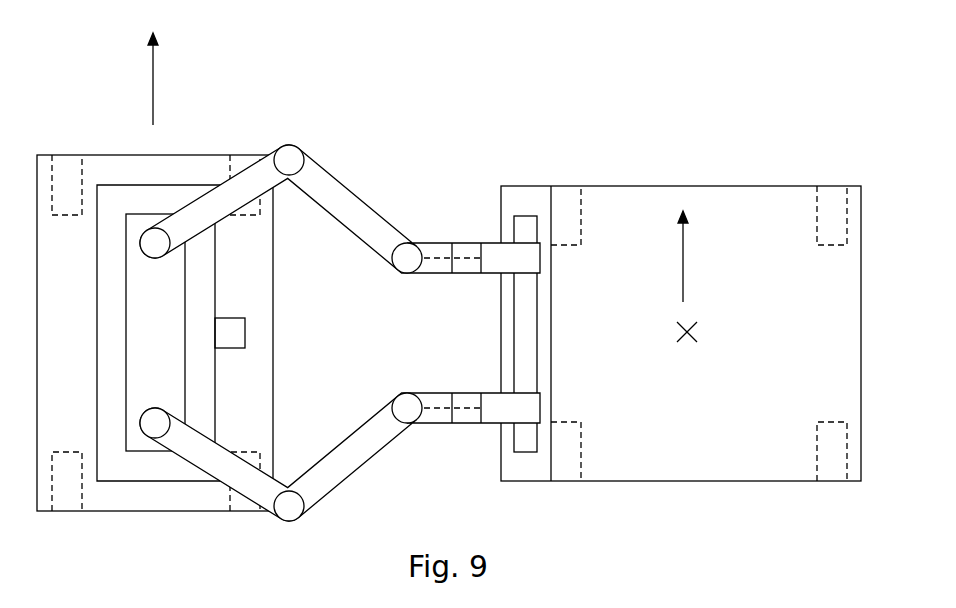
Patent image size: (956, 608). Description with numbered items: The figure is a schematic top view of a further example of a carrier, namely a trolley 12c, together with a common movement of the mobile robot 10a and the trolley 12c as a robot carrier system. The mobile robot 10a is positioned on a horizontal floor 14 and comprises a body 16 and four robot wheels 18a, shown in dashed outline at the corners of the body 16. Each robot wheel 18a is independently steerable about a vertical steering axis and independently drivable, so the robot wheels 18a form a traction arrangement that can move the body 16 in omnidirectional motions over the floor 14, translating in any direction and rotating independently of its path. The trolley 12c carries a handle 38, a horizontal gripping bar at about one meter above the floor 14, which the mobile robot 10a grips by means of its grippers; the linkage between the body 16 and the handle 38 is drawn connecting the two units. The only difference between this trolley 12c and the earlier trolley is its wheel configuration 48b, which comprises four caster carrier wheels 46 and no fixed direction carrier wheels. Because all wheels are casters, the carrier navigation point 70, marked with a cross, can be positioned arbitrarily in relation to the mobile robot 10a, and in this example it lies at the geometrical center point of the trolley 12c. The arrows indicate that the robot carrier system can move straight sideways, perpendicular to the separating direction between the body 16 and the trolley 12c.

The mobile robot 10a is at (104, 55).
The robot wheel 18a is at (70, 185).
The body 16 is at (78, 342).
The floor 14 is at (404, 493).
The handle 38 is at (510, 315).
The trolley 12c is at (678, 126).
The wheel configuration 48b is at (739, 158).
The caster carrier wheel 46 is at (832, 208).
The carrier navigation point 70 is at (695, 326).